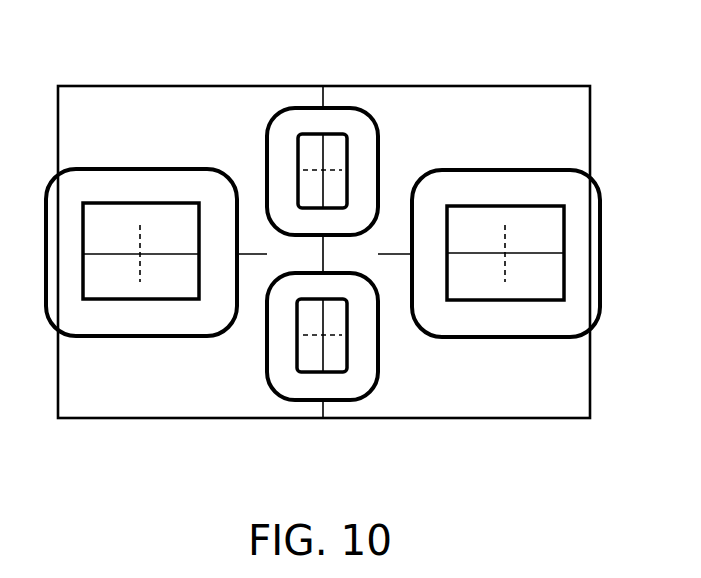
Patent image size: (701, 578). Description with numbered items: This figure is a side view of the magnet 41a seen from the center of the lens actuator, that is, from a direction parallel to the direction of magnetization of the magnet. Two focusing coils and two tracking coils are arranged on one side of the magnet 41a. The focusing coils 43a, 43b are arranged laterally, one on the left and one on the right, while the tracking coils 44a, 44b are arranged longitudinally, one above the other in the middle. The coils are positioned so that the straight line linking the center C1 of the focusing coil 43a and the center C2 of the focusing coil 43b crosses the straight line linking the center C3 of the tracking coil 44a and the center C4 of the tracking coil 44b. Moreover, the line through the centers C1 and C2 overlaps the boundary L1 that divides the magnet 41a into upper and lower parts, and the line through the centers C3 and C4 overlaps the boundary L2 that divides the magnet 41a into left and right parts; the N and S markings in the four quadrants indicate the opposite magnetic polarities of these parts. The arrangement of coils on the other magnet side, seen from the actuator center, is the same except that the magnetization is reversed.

The magnet 41a is at (240, 86).
The focusing coil 43a is at (142, 181).
The focusing coil 43b is at (500, 184).
The tracking coil 44a is at (283, 216).
The tracking coil 44b is at (298, 386).
The center of focusing coil C1 is at (140, 256).
The center of focusing coil C2 is at (505, 256).
The center of tracking coil C3 is at (325, 170).
The center of tracking coil C4 is at (325, 336).
The boundary L1 is at (393, 255).
The boundary L2 is at (323, 192).